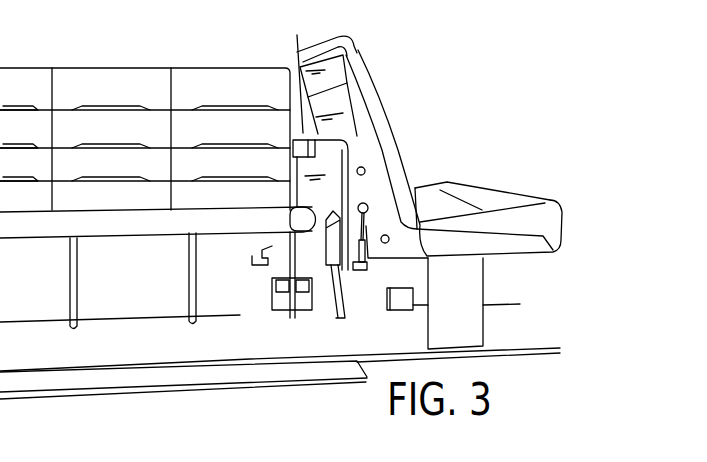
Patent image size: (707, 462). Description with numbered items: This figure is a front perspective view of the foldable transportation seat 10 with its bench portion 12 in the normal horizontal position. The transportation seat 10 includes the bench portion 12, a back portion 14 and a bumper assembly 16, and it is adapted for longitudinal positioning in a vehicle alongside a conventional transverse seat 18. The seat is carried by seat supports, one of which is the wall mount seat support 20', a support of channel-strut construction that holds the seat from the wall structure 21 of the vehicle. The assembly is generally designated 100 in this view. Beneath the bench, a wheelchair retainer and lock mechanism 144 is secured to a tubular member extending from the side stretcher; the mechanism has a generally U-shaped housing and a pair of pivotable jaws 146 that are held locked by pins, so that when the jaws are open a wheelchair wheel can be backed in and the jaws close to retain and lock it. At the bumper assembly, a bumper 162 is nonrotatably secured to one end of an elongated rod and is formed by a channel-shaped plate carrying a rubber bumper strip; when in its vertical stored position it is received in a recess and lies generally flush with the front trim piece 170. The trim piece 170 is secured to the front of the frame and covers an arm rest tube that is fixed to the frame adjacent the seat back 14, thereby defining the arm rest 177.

The transportation seat 10 is at (196, 55).
The cabinet assembly 100 is at (145, 105).
The bench portion 12 is at (128, 220).
The back portion 14 is at (121, 84).
The bumper assembly 16 is at (363, 148).
The conventional transverse seat 18 is at (407, 62).
The seat support 20' is at (280, 340).
The wall structure 21 is at (118, 273).
The wheelchair retainer and lock mechanism 144 is at (262, 243).
The pivotable jaws 146 is at (256, 286).
The bumper 162 is at (372, 201).
The trim piece 170 is at (332, 158).
The arm rest 177 is at (297, 35).